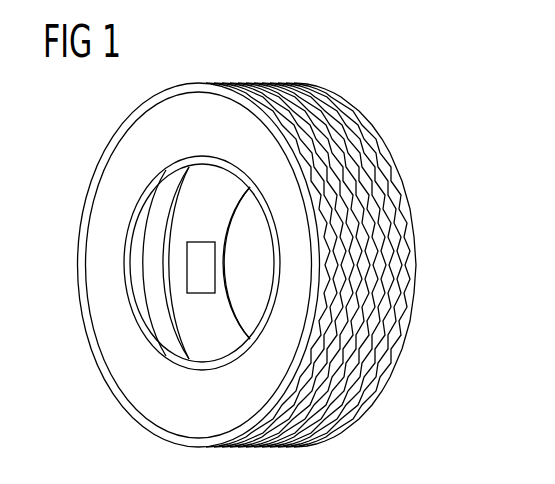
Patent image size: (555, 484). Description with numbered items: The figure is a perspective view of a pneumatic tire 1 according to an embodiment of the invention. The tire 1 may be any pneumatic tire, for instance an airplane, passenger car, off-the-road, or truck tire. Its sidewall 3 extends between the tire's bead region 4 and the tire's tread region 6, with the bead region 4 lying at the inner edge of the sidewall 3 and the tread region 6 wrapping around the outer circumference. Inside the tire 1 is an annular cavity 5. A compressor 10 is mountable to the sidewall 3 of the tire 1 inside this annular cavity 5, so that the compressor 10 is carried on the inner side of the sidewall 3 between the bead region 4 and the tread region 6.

The pneumatic tire 1 is at (429, 151).
The sidewall 3 is at (92, 227).
The bead region 4 is at (150, 342).
The annular cavity 5 is at (250, 287).
The tread region 6 is at (386, 328).
The compressor 10 is at (200, 267).